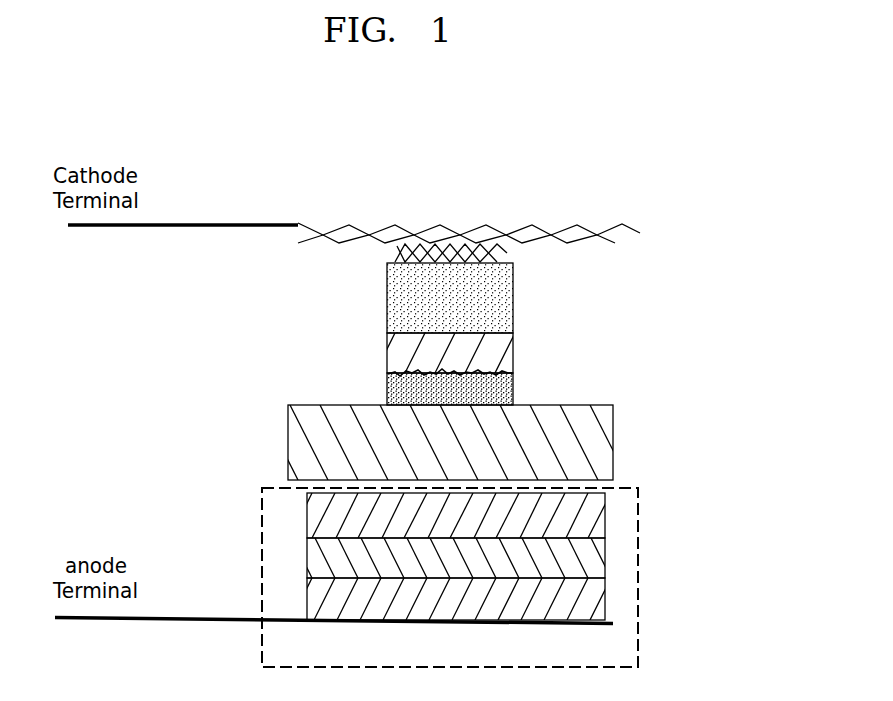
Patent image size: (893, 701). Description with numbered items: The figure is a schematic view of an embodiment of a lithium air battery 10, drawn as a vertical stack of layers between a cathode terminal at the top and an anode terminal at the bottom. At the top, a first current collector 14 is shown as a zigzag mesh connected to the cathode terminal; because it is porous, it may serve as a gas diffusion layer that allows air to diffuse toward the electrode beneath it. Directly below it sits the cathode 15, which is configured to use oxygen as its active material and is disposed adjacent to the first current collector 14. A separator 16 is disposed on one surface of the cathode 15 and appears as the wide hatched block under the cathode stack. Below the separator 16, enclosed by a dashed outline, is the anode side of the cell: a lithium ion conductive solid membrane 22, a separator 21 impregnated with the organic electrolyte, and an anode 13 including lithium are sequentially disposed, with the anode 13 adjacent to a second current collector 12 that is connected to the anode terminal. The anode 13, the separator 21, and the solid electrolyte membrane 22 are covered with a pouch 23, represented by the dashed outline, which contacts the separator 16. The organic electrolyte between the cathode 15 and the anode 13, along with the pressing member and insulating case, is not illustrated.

The lithium air battery 10 is at (697, 447).
The second current collector 12 is at (560, 625).
The anode 13 is at (462, 599).
The first current collector 14 is at (469, 219).
The cathode 15 is at (530, 266).
The separator 16 is at (459, 442).
The separator 21 is at (463, 558).
The lithium ion conductive solid membrane 22 is at (462, 515).
The pouch 23 is at (365, 575).